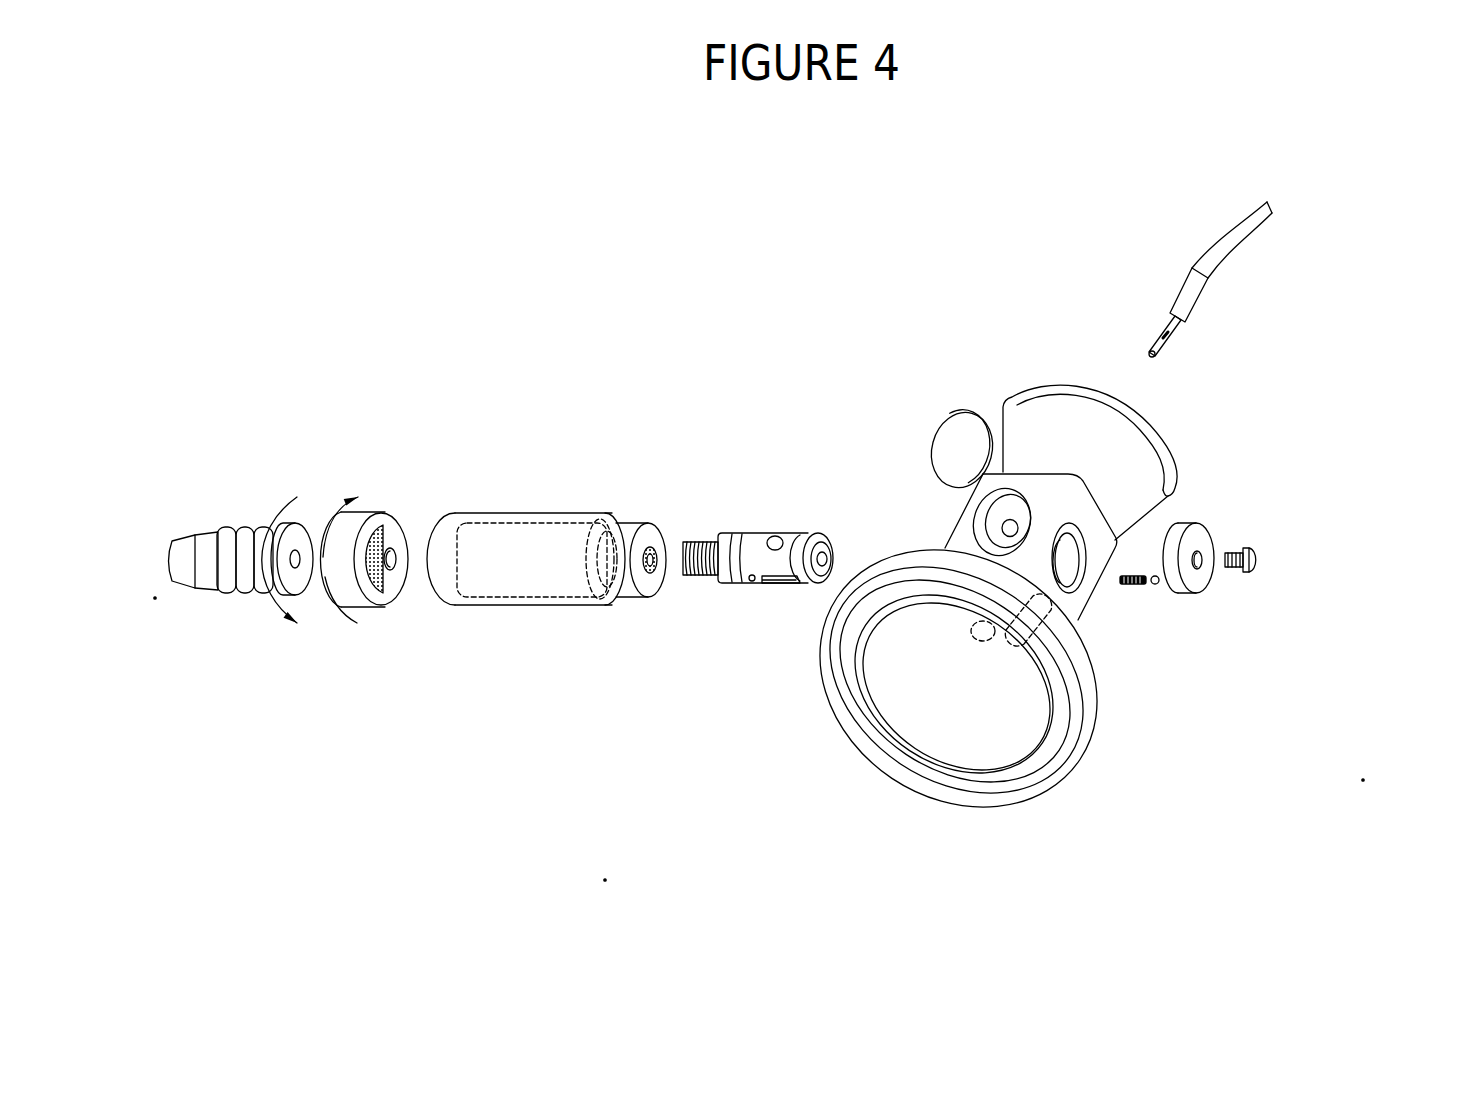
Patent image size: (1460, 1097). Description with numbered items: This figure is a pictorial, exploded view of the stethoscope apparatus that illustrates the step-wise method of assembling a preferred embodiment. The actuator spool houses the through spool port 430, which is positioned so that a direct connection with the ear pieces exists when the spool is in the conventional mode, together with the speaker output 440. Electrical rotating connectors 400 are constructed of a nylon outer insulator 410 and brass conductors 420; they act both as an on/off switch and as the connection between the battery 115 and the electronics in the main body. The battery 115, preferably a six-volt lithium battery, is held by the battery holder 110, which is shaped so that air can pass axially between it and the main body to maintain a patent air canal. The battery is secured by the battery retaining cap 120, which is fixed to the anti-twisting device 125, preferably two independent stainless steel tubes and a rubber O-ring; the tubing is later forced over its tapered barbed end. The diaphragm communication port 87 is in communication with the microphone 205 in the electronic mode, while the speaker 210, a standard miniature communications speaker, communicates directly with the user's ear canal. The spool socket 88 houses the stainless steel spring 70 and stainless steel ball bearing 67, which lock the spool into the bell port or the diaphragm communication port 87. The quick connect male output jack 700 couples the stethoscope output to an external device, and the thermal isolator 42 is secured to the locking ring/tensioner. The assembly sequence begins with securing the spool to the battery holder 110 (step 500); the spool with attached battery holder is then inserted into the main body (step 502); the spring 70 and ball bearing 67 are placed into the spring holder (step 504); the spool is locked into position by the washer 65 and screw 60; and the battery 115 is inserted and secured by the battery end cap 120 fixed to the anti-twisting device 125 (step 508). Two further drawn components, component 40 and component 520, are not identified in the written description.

The ring body 40 is at (1023, 800).
The thermal isolator 42 is at (1160, 425).
The screw 60 is at (1262, 573).
The washer 65 is at (1201, 598).
The stainless steel ball bearing 67 is at (1160, 586).
The stainless steel spring 70 is at (1136, 587).
The diaphragm communication port 87 is at (980, 640).
The spool socket 88 is at (1074, 592).
The battery holder 110 is at (634, 598).
The battery 115 is at (493, 600).
The battery retaining cap 120 is at (357, 607).
The anti-twisting device 125 is at (227, 597).
The microphone 205 is at (1018, 648).
The speaker 210 is at (945, 422).
The electrical rotating connectors 400 is at (730, 552).
The nylon outer insulator 410 is at (737, 583).
The brass conductors 420 is at (745, 586).
The through spool port 430 is at (757, 586).
The speaker output 440 is at (765, 530).
The step of securing spool to battery holder 500 is at (1012, 554).
The step of inserting spool into main body 502 is at (960, 512).
The step of placing spring and ball bearing 504 is at (1236, 617).
The step of inserting and securing battery 508 is at (381, 547).
The flange 520 is at (1112, 405).
The quick connect male output jack 700 is at (1178, 288).